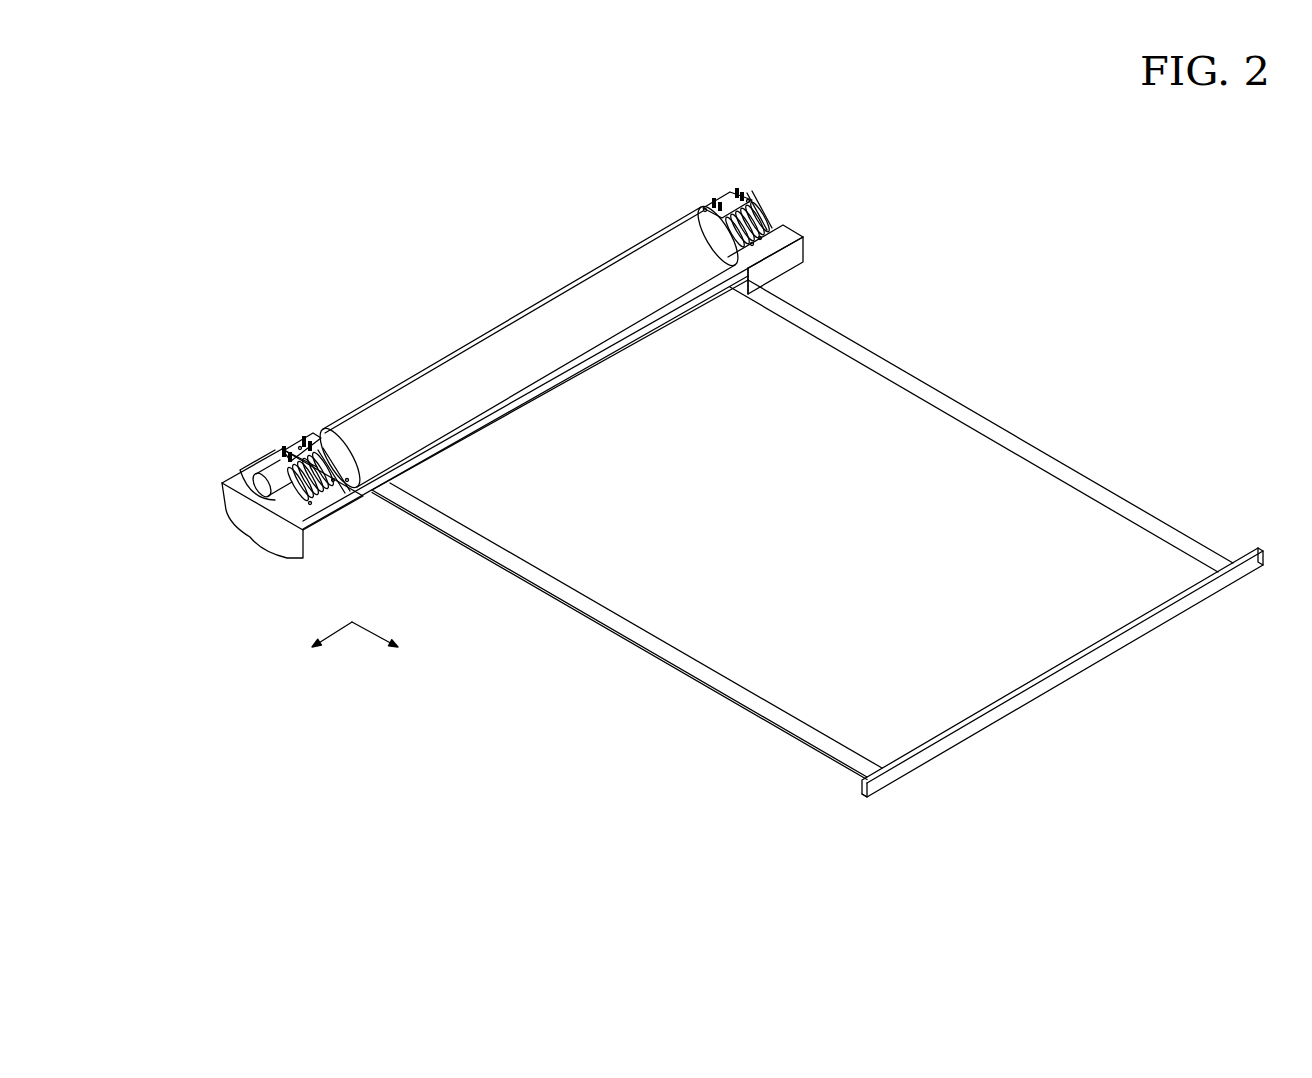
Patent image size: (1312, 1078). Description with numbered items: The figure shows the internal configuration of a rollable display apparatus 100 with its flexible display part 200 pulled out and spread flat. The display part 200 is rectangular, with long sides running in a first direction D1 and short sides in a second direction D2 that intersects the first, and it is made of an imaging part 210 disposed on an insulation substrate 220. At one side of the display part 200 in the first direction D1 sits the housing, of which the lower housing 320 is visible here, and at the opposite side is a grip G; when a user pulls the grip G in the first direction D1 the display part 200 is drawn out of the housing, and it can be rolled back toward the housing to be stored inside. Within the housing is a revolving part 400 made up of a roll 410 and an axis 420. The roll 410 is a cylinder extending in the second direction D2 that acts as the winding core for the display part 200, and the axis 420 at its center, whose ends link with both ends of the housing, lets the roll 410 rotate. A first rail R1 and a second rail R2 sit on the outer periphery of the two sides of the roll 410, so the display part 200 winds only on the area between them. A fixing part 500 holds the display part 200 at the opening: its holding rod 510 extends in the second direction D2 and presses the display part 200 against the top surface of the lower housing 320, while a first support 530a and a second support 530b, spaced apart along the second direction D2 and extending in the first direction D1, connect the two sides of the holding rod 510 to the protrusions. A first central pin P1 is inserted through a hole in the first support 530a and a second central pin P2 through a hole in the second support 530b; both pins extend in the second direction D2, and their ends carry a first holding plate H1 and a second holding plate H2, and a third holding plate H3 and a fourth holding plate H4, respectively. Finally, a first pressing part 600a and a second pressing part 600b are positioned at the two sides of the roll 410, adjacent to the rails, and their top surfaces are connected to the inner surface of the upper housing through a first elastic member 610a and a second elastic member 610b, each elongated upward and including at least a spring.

The display apparatus 100 is at (931, 252).
The display part 200 is at (1063, 383).
The imaging part 210 is at (945, 400).
The insulation substrate 220 is at (1000, 457).
The lower housing 320 is at (263, 530).
The revolving part 400 is at (148, 447).
The roll 410 is at (277, 463).
The axis 420 is at (265, 480).
The fixing part 500 is at (604, 336).
The holding rod 510 is at (494, 398).
The first support 530a is at (357, 432).
The second support 530b is at (765, 208).
The first pressing part 600a is at (280, 442).
The second pressing part 600b is at (724, 199).
The first elastic member 610a is at (283, 450).
The second elastic member 610b is at (738, 188).
The first holding plate H1 is at (310, 505).
The second holding plate H2 is at (300, 447).
The third holding plate H3 is at (703, 210).
The fourth holding plate H4 is at (748, 200).
The first central pin P1 is at (333, 482).
The second central pin P2 is at (752, 244).
The first rail R1 is at (347, 482).
The second rail R2 is at (760, 237).
The grip G is at (1091, 668).
The first direction D1 is at (383, 648).
The second direction D2 is at (323, 648).